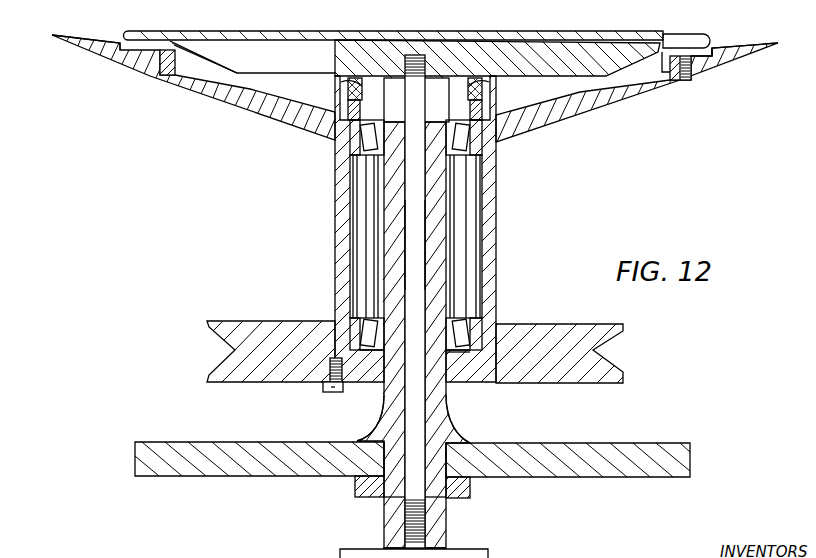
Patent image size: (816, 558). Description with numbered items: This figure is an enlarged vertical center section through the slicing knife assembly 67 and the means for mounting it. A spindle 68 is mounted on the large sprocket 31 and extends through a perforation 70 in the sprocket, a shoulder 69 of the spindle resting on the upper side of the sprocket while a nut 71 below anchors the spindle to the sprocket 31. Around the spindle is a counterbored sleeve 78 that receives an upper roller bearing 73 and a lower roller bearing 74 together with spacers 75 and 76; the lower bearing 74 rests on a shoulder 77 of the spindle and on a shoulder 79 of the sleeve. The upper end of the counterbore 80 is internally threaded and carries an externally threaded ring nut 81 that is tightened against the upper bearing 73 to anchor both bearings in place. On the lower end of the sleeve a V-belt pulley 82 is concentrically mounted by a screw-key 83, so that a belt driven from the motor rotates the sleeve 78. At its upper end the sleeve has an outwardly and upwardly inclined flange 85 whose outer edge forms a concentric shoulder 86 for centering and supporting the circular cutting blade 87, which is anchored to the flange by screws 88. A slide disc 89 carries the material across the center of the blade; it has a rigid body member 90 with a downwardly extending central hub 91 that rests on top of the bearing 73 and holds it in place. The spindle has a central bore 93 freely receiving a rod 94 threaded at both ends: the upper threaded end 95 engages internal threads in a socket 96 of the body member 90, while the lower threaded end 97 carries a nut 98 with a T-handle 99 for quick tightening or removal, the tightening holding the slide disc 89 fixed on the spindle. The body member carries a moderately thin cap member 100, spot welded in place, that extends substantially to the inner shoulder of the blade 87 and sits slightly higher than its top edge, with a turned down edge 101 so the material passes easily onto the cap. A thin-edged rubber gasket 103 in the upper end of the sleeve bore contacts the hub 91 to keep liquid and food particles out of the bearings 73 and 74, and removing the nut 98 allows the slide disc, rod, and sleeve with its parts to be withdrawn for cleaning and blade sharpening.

The sprocket 31 is at (617, 443).
The slicing knife assembly 67 is at (205, 256).
The spindle 68 is at (447, 400).
The shoulder 69 is at (468, 436).
The perforation 70 is at (447, 463).
The nut 71 is at (471, 491).
The roller bearing 73 is at (479, 155).
The roller bearing 74 is at (477, 326).
The spacer 75 is at (455, 232).
The spacer 76 is at (478, 271).
The shoulder 77 is at (445, 390).
The counterbored sleeve 78 is at (497, 197).
The shoulder 79 is at (466, 351).
The counterbore 80 is at (480, 244).
The ring nut 81 is at (484, 111).
The V-belt pulley 82 is at (575, 323).
The screw-key 83 is at (328, 388).
The flange 85 is at (243, 113).
The shoulder 86 is at (165, 72).
The circular cutting blade 87 is at (88, 40).
The screws 88 is at (691, 57).
The slide disc 89 is at (611, 32).
The rigid body member 90 is at (287, 48).
The central hub 91 is at (368, 79).
The central bore 93 is at (382, 214).
The rod 94 is at (410, 241).
The upper threaded end 95 is at (417, 55).
The socket 96 is at (428, 62).
The lower threaded end 97 is at (403, 517).
The nut 98 is at (442, 528).
The T-handle 99 is at (479, 550).
The cap member 100 is at (652, 32).
The turned down edge 101 is at (713, 47).
The rubber gasket 103 is at (471, 80).